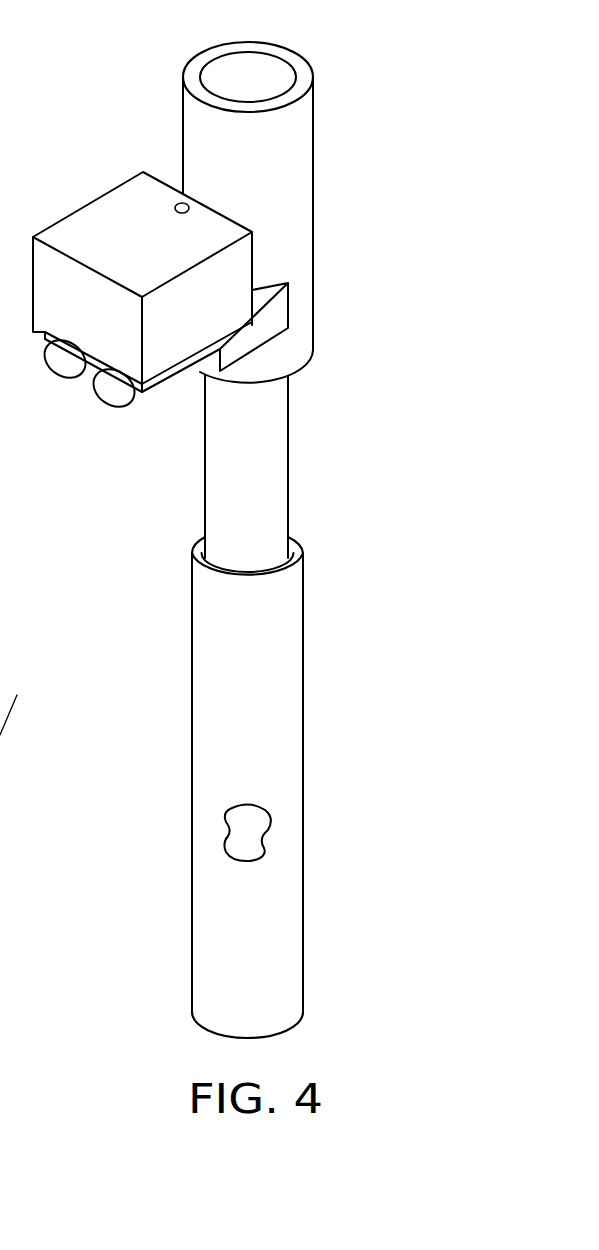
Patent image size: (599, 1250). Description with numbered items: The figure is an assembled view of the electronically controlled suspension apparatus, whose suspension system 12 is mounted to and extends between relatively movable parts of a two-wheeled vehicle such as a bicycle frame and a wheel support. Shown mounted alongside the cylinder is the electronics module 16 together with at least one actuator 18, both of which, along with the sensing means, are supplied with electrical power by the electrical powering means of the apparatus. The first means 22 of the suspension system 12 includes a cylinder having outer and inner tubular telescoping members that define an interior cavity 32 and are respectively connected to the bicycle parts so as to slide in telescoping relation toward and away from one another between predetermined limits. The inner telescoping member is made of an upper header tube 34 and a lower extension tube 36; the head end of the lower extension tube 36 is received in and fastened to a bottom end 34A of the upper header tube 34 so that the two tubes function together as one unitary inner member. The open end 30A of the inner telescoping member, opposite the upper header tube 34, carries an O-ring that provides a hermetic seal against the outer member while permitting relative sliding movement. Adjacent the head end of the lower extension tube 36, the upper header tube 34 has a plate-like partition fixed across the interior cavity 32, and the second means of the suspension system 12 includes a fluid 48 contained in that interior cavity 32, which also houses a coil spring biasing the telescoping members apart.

The suspension system 12 is at (173, 633).
The electronics module 16 is at (72, 217).
The actuator 18 is at (113, 397).
The first means 22 is at (305, 720).
The open end of inner telescoping member 30A is at (272, 62).
The interior cavity 32 is at (240, 842).
The upper header tube 34 is at (315, 194).
The bottom end of upper header tube 34A is at (307, 363).
The lower extension tube 36 is at (288, 492).
The fluid 48 is at (247, 815).